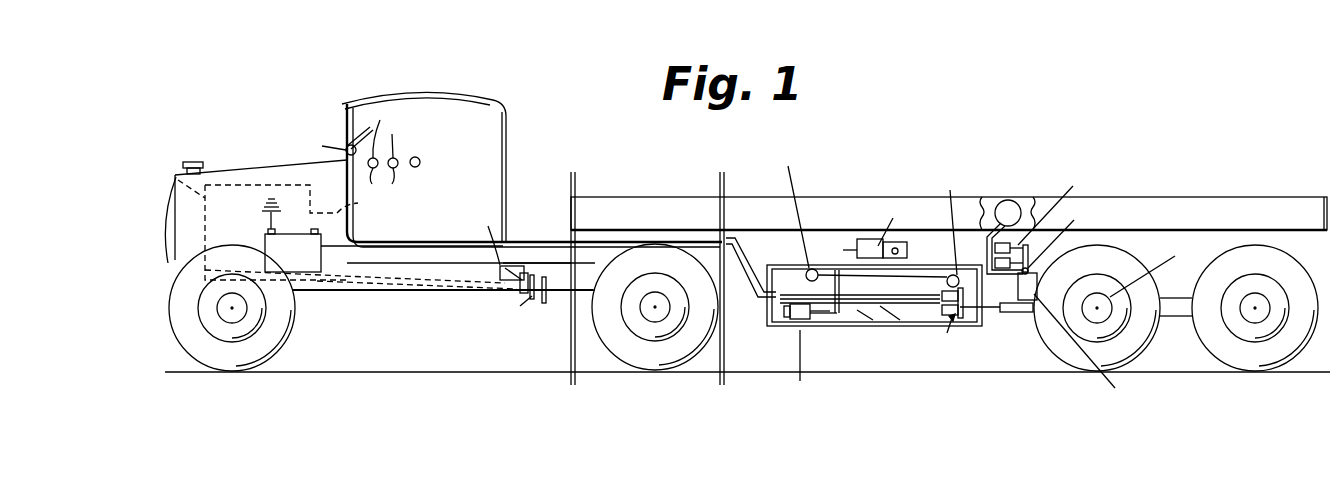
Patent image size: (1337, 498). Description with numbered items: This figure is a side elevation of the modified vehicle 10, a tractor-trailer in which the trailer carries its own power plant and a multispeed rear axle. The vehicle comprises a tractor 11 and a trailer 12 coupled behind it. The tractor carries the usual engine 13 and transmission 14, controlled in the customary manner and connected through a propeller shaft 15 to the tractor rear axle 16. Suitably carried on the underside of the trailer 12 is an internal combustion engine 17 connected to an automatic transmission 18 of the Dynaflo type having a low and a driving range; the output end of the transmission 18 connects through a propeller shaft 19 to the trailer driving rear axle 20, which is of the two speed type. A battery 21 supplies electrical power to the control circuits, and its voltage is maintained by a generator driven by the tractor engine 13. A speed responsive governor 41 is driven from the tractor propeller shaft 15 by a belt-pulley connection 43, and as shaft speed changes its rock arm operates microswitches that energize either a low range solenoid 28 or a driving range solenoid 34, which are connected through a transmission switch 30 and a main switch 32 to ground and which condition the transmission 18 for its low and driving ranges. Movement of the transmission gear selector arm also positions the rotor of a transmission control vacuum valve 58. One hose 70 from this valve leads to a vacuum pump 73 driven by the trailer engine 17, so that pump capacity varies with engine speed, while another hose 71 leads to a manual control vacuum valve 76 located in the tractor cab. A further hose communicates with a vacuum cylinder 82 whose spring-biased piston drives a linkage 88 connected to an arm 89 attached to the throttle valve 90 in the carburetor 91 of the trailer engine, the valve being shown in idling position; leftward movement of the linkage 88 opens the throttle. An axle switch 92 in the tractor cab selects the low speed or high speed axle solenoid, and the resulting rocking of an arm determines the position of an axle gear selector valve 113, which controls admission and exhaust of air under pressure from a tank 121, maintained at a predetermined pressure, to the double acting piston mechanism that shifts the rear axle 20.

The modified vehicle 10 is at (628, 166).
The tractor 11 is at (418, 93).
The trailer 12 is at (673, 197).
The engine 13 is at (173, 173).
The transmission 14 is at (362, 203).
The propeller shaft 15 is at (583, 305).
The tractor rear axle 16 is at (652, 313).
The internal combustion engine 17 is at (800, 247).
The automatic transmission 18 is at (912, 316).
The propeller shaft 19 is at (1028, 303).
The trailer driving rear axle 20 is at (1104, 318).
The battery 21 is at (313, 273).
The low range solenoid 28 is at (965, 300).
The transmission switch 30 is at (434, 160).
The main switch 32 is at (420, 166).
The driving range solenoid 34 is at (935, 316).
The speed responsive governor 41 is at (525, 268).
The belt-pulley connection 43 is at (548, 277).
The transmission control vacuum valve 58 is at (953, 275).
The hose 70 is at (860, 291).
The hose 71 is at (751, 280).
The vacuum pump 73 is at (811, 268).
The manual control vacuum valve 76 is at (349, 147).
The vacuum cylinder 82 is at (794, 321).
The linkage 88 is at (823, 316).
The arm 89 is at (907, 251).
The throttle valve 90 is at (868, 246).
The carburetor 91 is at (838, 252).
The axle switch 92 is at (417, 154).
The axle gear selector valve 113 is at (1134, 241).
The tank 121 is at (1012, 200).